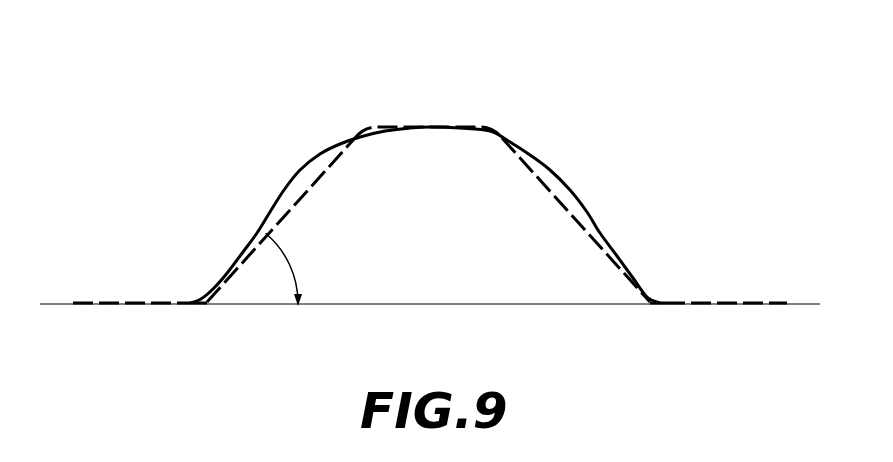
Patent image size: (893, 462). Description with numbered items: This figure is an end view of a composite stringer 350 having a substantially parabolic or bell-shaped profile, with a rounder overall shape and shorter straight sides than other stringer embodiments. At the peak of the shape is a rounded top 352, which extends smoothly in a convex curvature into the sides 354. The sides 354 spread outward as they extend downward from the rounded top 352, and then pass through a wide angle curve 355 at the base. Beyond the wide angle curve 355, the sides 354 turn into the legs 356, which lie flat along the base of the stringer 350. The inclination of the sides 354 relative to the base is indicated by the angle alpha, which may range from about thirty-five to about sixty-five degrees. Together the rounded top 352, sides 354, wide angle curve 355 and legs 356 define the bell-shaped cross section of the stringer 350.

The stringer 350 is at (204, 85).
The rounded top 352 is at (417, 126).
The sides 354 is at (252, 240).
The wide angle curve 355 is at (203, 301).
The legs 356 is at (123, 301).
The angle α alpha is at (290, 282).